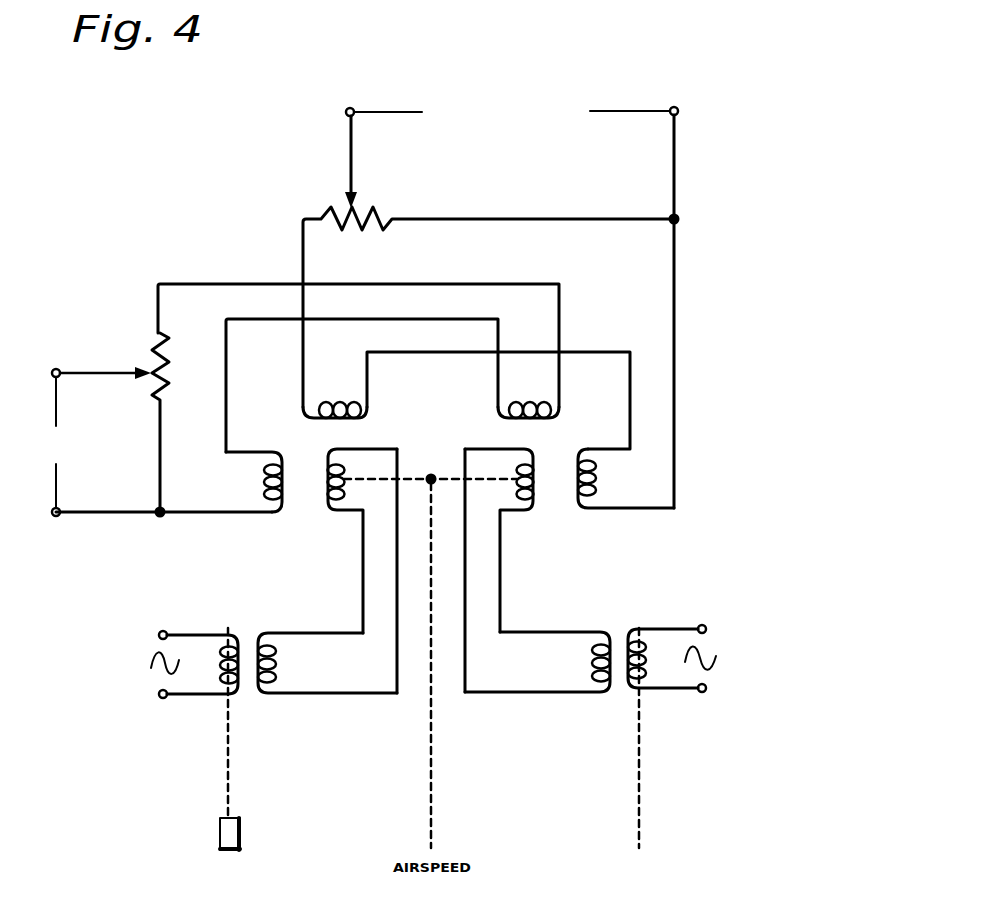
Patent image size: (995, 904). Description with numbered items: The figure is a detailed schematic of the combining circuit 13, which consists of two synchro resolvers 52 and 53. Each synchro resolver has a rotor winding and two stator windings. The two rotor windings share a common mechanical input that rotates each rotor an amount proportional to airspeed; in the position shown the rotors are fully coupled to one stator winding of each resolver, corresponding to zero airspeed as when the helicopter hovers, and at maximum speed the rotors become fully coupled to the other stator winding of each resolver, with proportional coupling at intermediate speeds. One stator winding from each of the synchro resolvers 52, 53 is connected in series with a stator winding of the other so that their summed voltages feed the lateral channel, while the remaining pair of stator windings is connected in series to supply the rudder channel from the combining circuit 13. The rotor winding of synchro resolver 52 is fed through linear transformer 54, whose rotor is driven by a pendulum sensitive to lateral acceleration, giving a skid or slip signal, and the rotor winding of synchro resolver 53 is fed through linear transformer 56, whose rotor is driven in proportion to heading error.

The combining circuit 13 is at (220, 226).
The synchro resolver 52 is at (311, 443).
The synchro resolver 53 is at (556, 443).
The linear transformer 54 is at (257, 628).
The linear transformer 56 is at (627, 626).